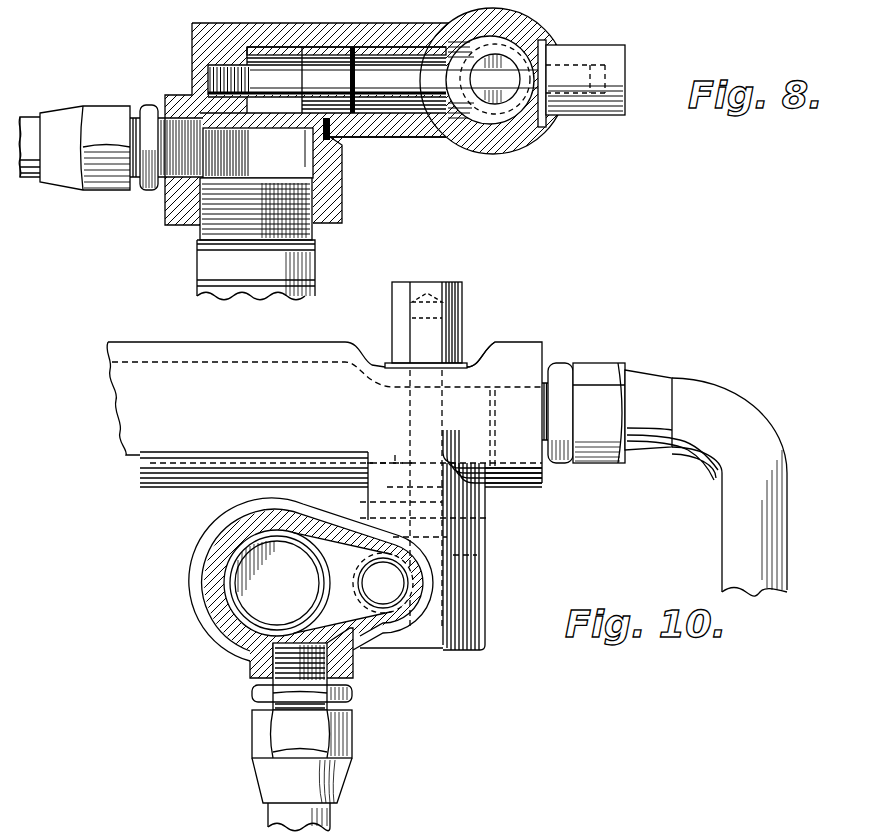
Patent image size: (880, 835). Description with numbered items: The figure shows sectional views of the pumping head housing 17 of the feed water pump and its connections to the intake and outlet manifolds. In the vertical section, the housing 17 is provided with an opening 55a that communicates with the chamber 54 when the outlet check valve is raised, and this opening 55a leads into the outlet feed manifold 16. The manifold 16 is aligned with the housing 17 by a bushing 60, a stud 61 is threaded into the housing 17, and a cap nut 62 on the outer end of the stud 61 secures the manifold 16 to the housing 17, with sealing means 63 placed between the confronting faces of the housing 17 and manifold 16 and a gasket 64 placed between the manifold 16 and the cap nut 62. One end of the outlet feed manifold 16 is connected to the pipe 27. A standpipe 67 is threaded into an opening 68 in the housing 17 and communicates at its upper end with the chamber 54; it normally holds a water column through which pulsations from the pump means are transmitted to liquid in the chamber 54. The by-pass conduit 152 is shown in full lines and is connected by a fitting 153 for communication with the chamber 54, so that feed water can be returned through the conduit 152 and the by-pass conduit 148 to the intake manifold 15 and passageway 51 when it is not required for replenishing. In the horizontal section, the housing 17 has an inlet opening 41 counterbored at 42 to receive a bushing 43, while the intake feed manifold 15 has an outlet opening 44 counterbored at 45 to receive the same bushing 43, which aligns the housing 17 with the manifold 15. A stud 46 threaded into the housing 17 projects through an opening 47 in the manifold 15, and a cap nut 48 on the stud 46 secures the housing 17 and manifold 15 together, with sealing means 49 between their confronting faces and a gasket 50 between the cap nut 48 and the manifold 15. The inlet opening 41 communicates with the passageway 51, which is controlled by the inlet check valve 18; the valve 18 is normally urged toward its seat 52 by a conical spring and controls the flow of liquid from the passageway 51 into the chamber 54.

In FIG. 8, the pumping head housing 17 is at (192, 50).
In FIG. 10, the pumping head housing 17 is at (208, 617).
In FIG. 8, the opening 55a is at (300, 24).
In FIG. 8, the stud 61 is at (208, 75).
In FIG. 8, the by-pass conduit 152 is at (35, 115).
In FIG. 10, the by-pass conduit 152 is at (332, 812).
In FIG. 8, the fitting 153 is at (151, 105).
In FIG. 10, the fitting 153 is at (252, 693).
In FIG. 8, the bushing 60 is at (300, 104).
In FIG. 8, the chamber 54 is at (258, 153).
In FIG. 10, the chamber 54 is at (225, 560).
In FIG. 8, the sealing means 63 is at (337, 137).
In FIG. 8, the outlet feed manifold 16 is at (405, 137).
In FIG. 8, the pipe 27 is at (500, 115).
In FIG. 8, the gasket 64 is at (546, 125).
In FIG. 8, the cap nut 62 is at (605, 115).
In FIG. 8, the opening 68 is at (313, 203).
In FIG. 8, the standpipe 67 is at (197, 260).
In FIG. 10, the standpipe 67 is at (243, 590).
In FIG. 10, the cap nut 48 is at (465, 303).
In FIG. 10, the gasket 50 is at (481, 347).
In FIG. 10, the opening 47 is at (440, 378).
In FIG. 10, the intake feed manifold 15 is at (130, 412).
In FIG. 10, the stud 46 is at (438, 430).
In FIG. 10, the outlet opening 44 is at (390, 450).
In FIG. 10, the counterbore 45 is at (385, 502).
In FIG. 10, the bushing 43 is at (480, 507).
In FIG. 10, the sealing means 49 is at (487, 518).
In FIG. 10, the counterbore 42 is at (467, 532).
In FIG. 10, the inlet opening 41 is at (477, 555).
In FIG. 10, the passageway 51 is at (367, 558).
In FIG. 10, the inlet check valve 18 is at (383, 583).
In FIG. 10, the seat 52 is at (360, 608).
In FIG. 10, the by-pass conduit 148 is at (725, 548).